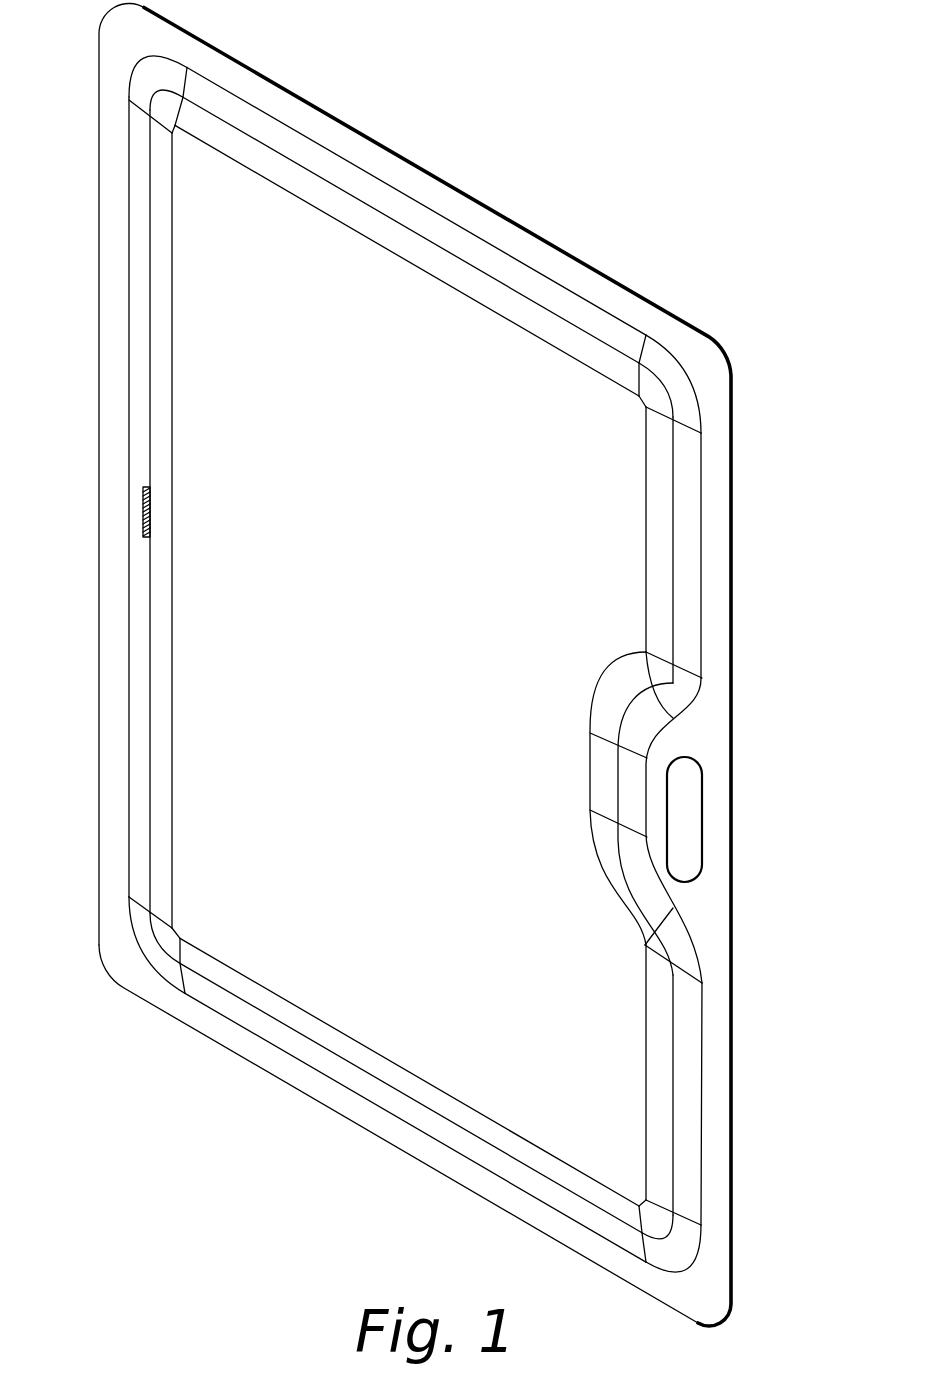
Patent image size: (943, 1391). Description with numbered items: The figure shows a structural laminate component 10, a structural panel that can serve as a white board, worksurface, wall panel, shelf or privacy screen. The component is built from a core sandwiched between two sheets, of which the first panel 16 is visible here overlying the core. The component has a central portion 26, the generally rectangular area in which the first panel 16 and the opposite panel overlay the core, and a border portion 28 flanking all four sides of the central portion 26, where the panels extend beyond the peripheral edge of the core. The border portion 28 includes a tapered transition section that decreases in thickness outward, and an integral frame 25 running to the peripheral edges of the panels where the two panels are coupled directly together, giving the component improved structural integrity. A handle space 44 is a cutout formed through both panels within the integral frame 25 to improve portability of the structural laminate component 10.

The structural laminate component 10 is at (583, 147).
The first panel 16 is at (185, 736).
The integral frame 25 is at (715, 450).
The central portion 26 is at (230, 397).
The border portion 28 is at (115, 508).
The handle space 44 is at (683, 780).